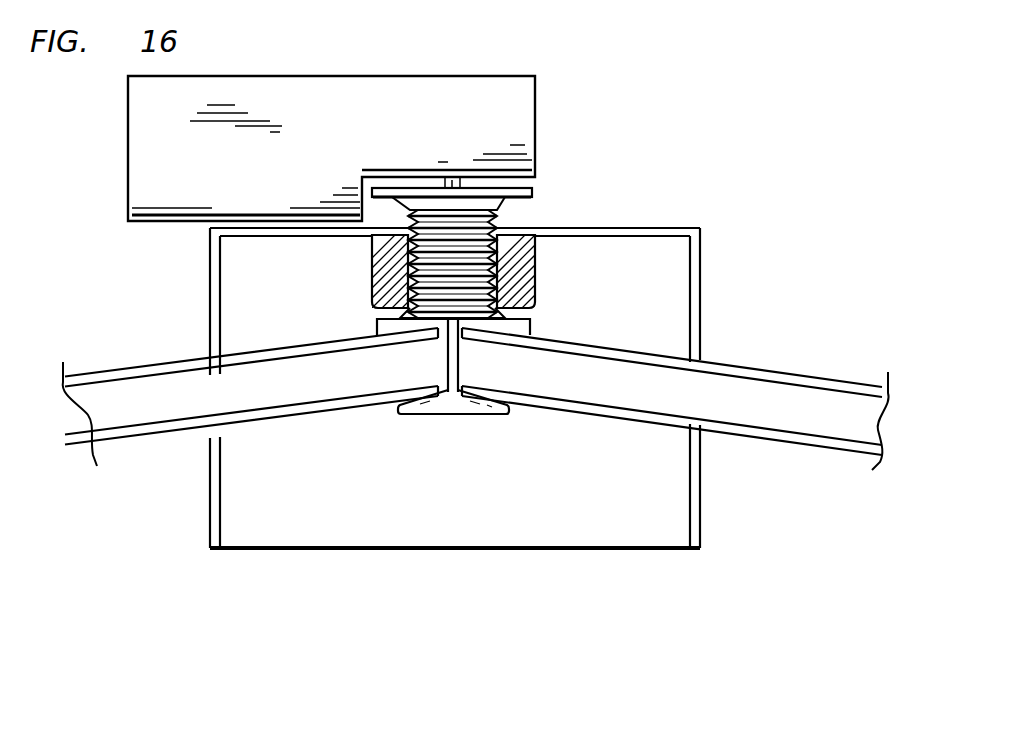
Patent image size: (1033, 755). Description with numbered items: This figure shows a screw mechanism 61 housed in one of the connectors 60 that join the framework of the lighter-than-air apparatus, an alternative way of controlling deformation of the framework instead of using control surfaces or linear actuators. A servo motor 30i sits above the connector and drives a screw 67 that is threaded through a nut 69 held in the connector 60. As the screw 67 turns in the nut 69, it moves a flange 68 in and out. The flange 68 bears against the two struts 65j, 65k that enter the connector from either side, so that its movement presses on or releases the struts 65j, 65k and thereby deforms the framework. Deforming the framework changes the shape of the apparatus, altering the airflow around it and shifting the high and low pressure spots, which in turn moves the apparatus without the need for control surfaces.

The servo motor 30i is at (127, 150).
The screw 67 is at (497, 213).
The nut 69 is at (372, 270).
The flange 68 is at (465, 414).
The screw mechanism 61 is at (700, 508).
The strut 65j is at (158, 437).
The strut 65k is at (805, 376).
The connector 60 is at (760, 583).